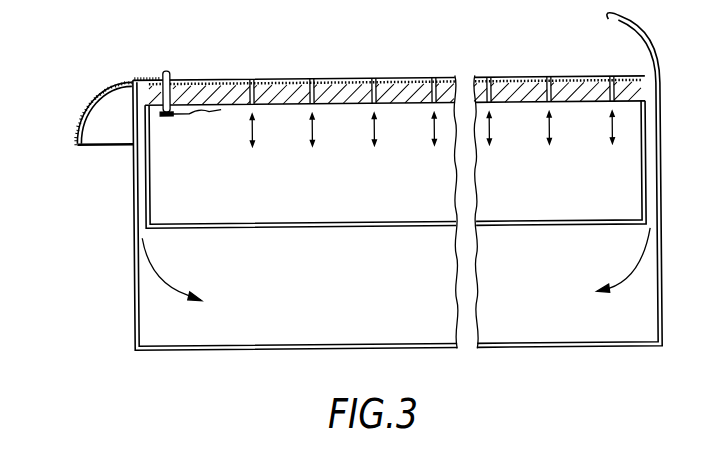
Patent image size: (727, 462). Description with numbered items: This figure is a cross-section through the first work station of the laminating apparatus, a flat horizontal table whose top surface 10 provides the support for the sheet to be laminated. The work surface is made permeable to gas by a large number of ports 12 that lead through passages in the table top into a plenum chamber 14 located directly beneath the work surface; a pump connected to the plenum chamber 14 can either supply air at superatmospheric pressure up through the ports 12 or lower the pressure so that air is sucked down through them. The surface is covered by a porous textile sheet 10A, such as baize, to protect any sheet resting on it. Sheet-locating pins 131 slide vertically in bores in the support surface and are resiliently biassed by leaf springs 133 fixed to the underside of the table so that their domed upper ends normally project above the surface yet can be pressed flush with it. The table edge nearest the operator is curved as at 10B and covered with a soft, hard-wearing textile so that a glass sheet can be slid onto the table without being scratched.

The top surface 10 is at (520, 80).
The porous textile sheet 10A is at (424, 78).
The curved edge 10B is at (92, 103).
The ports 12 is at (374, 79).
The plenum chamber 14 is at (373, 188).
The pins 131 is at (168, 69).
The leaf springs 133 is at (178, 115).